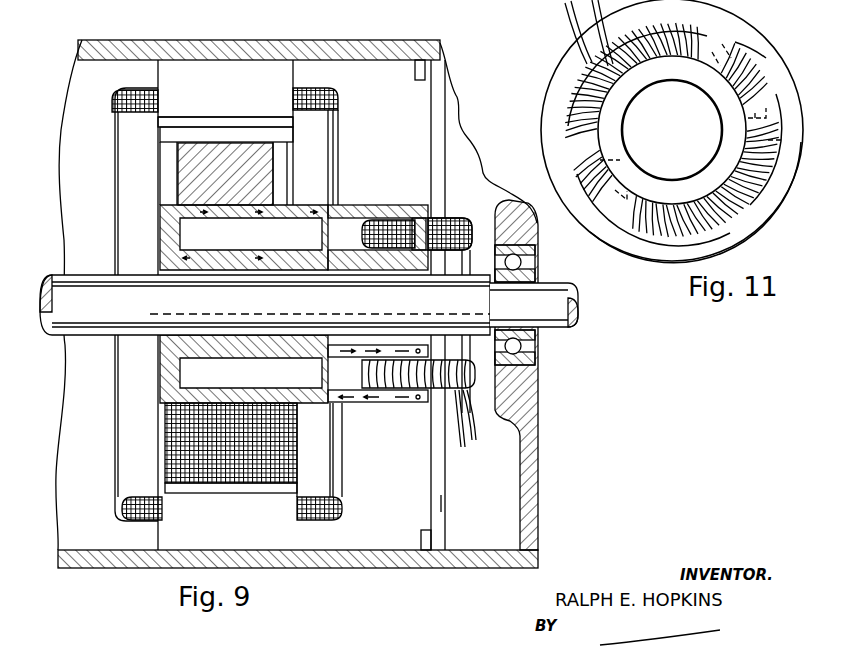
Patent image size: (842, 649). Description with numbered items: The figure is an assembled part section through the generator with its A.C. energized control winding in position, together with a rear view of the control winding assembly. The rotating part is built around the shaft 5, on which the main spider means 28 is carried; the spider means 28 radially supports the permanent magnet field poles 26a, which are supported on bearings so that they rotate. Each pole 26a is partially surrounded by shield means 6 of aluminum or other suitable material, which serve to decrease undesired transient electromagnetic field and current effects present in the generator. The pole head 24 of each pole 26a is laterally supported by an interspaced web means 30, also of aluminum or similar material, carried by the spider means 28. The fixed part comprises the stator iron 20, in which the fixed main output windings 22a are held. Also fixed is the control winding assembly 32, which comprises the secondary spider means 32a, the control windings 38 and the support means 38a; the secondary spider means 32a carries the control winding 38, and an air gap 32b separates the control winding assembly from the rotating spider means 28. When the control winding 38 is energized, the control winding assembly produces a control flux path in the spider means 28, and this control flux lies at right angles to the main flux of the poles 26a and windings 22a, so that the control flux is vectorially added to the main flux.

In FIG. 9, the shaft 5 is at (58, 312).
In FIG. 9, the shield means 6 is at (282, 167).
In FIG. 9, the stator iron structure 20 is at (280, 73).
In FIG. 9, the main output windings 22a is at (340, 105).
In FIG. 9, the pole head 24 is at (160, 137).
In FIG. 9, the permanent magnet field pole 26a is at (218, 180).
In FIG. 9, the main spider means 28 is at (160, 226).
In FIG. 9, the interspaced web means 30 is at (175, 445).
In FIG. 9, the control winding assembly 32 is at (428, 181).
In FIG. 9, the secondary spider means 32a is at (410, 205).
In FIG. 11, the secondary spider means 32a is at (550, 126).
In FIG. 9, the air gap 32b is at (333, 415).
In FIG. 9, the control winding 38 is at (470, 430).
In FIG. 11, the control winding 38 is at (580, 20).
In FIG. 9, the support means 38a is at (445, 503).